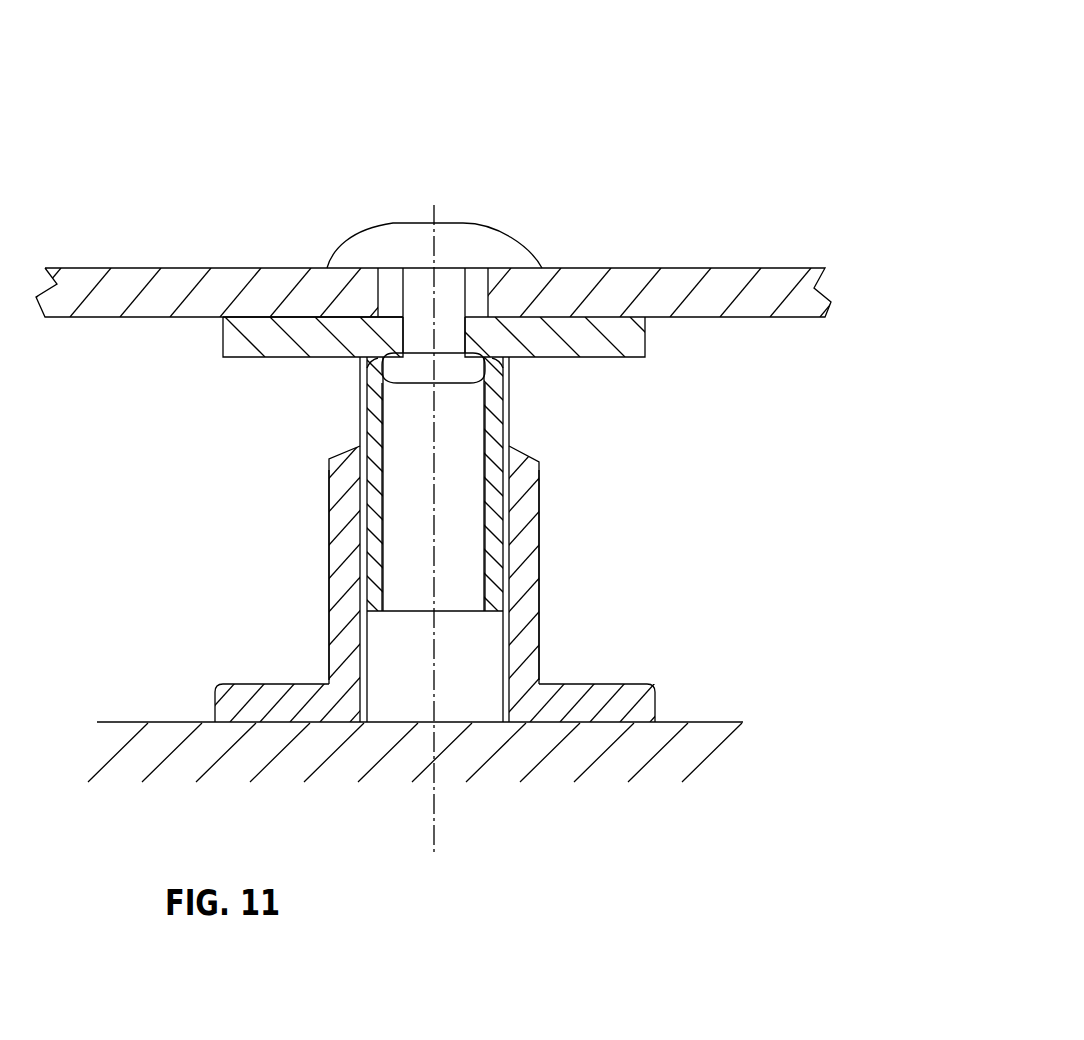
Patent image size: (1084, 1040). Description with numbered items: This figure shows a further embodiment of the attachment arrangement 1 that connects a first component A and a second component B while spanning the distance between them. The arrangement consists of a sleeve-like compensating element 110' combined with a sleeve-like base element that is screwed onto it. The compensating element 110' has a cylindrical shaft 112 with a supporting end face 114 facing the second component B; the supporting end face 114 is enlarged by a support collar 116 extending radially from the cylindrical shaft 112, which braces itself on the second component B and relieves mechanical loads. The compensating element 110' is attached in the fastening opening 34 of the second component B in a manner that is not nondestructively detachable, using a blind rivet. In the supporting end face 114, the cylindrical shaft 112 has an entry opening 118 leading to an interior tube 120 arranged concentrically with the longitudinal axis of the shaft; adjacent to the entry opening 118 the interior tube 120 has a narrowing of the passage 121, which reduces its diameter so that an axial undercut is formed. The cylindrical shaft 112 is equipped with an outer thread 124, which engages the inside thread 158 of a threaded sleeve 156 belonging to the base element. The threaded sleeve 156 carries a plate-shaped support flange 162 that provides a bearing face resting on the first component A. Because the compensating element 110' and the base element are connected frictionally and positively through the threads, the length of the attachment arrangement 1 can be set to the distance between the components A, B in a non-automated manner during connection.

The attachment arrangement 1 is at (664, 100).
The fastening opening 34 is at (478, 293).
The compensating element 110' is at (330, 539).
The cylindrical shaft 112 is at (495, 420).
The supporting end face 114 is at (343, 312).
The support collar 116 is at (625, 340).
The entry opening 118 is at (458, 330).
The interior tube 120 is at (417, 437).
The narrowing of the passage 121 is at (503, 358).
The outer thread 124 is at (362, 508).
The threaded sleeve 156 is at (347, 573).
The inside thread 158 is at (503, 630).
The support flange 162 is at (268, 708).
The first component A is at (634, 742).
The second component B is at (704, 293).